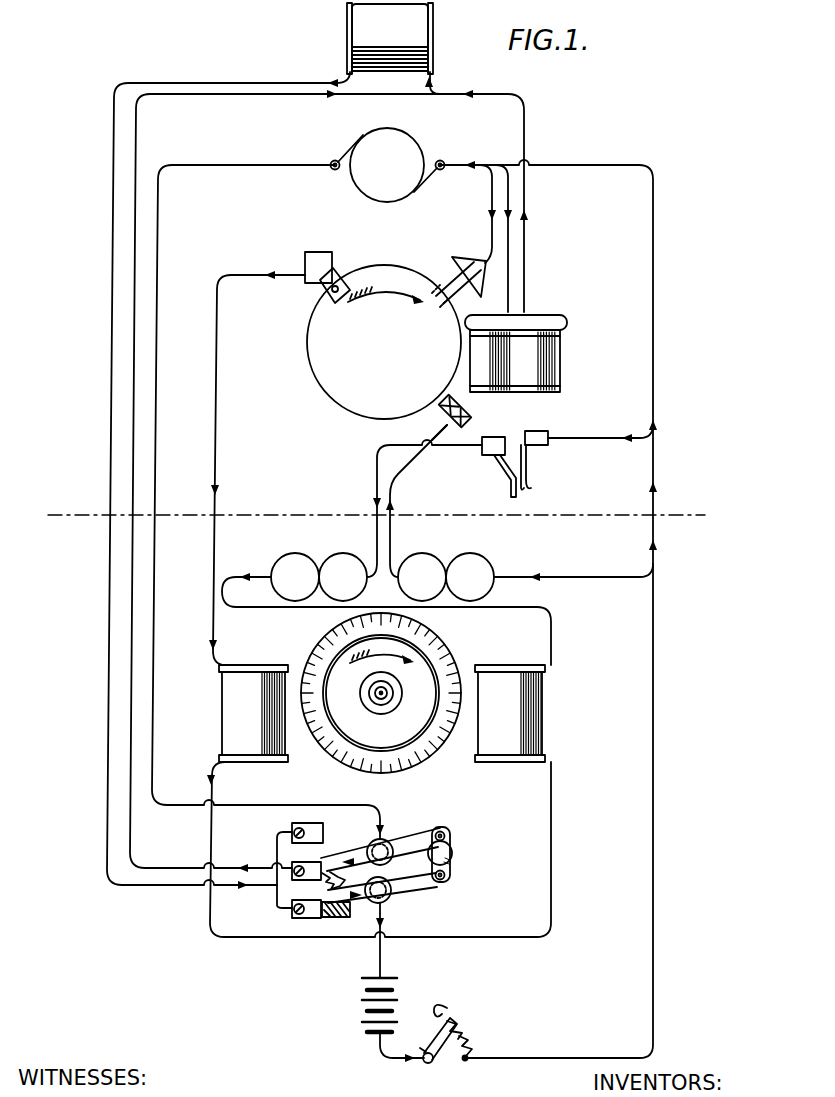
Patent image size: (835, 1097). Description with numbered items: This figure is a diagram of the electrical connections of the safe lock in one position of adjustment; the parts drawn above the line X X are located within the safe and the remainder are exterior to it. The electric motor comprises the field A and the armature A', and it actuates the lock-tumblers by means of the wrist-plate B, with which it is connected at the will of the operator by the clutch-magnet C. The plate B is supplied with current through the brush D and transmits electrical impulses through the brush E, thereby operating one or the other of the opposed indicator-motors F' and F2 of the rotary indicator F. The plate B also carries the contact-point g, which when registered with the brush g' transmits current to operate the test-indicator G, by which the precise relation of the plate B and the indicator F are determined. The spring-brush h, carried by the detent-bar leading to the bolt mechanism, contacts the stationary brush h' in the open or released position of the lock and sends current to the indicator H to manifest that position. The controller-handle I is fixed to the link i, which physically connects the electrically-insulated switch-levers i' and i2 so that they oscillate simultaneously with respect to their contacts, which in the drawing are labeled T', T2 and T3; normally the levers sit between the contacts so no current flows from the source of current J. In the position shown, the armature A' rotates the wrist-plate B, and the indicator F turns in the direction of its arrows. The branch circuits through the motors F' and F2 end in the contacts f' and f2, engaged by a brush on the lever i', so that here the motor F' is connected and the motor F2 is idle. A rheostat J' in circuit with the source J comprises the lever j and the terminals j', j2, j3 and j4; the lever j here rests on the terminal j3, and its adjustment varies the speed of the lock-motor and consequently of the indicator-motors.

The field A is at (390, 38).
The armature A' is at (388, 165).
The wrist-plate B is at (384, 342).
The clutch-magnet C is at (556, 357).
The brush D is at (458, 281).
The brush E is at (316, 280).
The rotary indicator F is at (381, 693).
The indicator-motor F' is at (253, 713).
The indicator-motor F2 is at (510, 713).
The test-indicator G is at (446, 569).
The indicator H is at (319, 569).
The controller-handle I is at (452, 853).
The link i is at (450, 865).
The switch-lever i' is at (382, 894).
The switch-lever i2 is at (428, 836).
The source of current J is at (386, 1005).
The rheostat J' is at (440, 1054).
The lever j is at (417, 1044).
The terminal j' is at (465, 1074).
The terminal j2 is at (474, 1044).
The terminal j3 is at (463, 1028).
The terminal j4 is at (444, 1002).
The terminal T' is at (306, 919).
The terminal T2 is at (306, 881).
The terminal T3 is at (300, 865).
The contact f' is at (337, 920).
The contact f2 is at (345, 882).
The contact-point g is at (441, 404).
The brush g' is at (459, 435).
The spring-brush h is at (535, 464).
The stationary brush h' is at (499, 467).
The line X is at (374, 516).